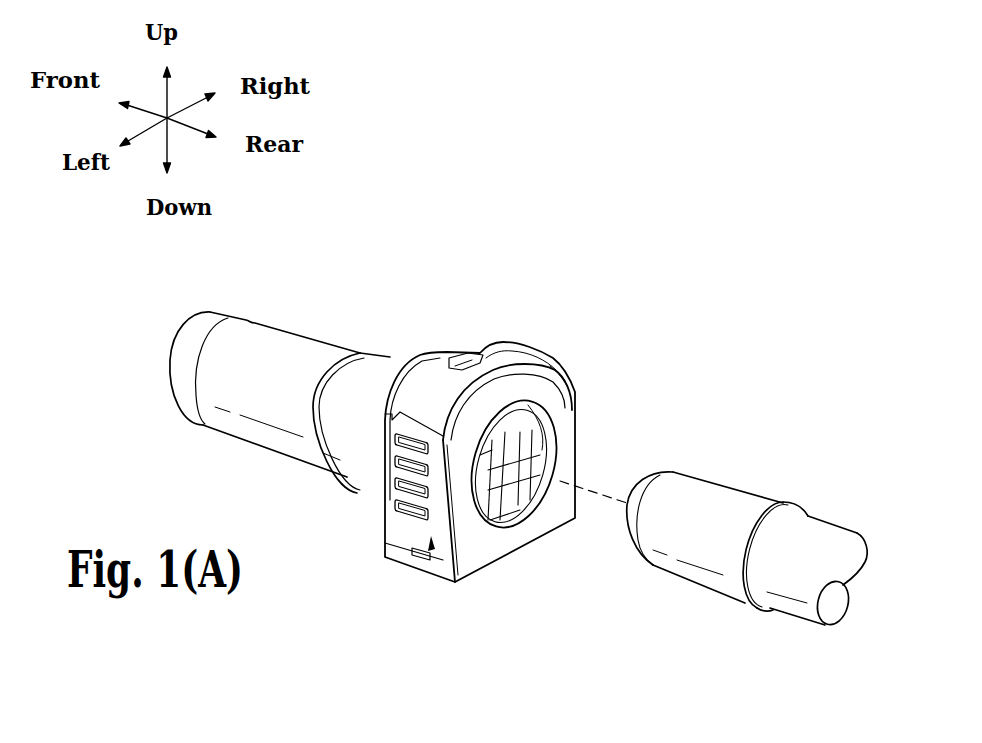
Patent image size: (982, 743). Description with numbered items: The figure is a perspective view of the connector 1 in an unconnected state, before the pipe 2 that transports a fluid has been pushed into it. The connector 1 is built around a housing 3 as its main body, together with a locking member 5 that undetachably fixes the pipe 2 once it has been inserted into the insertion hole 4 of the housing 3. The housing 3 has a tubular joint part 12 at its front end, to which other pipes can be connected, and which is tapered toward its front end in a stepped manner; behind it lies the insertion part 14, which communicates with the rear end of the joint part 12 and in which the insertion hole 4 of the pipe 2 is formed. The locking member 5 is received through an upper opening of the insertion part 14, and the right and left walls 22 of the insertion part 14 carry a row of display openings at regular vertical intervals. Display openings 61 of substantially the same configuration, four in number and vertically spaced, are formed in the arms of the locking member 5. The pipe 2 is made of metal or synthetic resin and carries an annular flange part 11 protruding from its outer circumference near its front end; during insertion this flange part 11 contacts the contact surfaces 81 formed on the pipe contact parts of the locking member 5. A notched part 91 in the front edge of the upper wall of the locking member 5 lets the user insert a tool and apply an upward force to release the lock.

The connector 1 is at (334, 264).
The pipe 2 is at (796, 459).
The housing 3 is at (567, 238).
The insertion hole 4 is at (553, 428).
The locking member 5 is at (508, 347).
The annular flange part 11 is at (760, 517).
The tubular joint part 12 is at (307, 360).
The insertion part 14 is at (557, 361).
The right and left walls 22 is at (427, 560).
The display openings 61 is at (396, 440).
The contact surface 81 is at (516, 462).
The notched part 91 is at (458, 363).